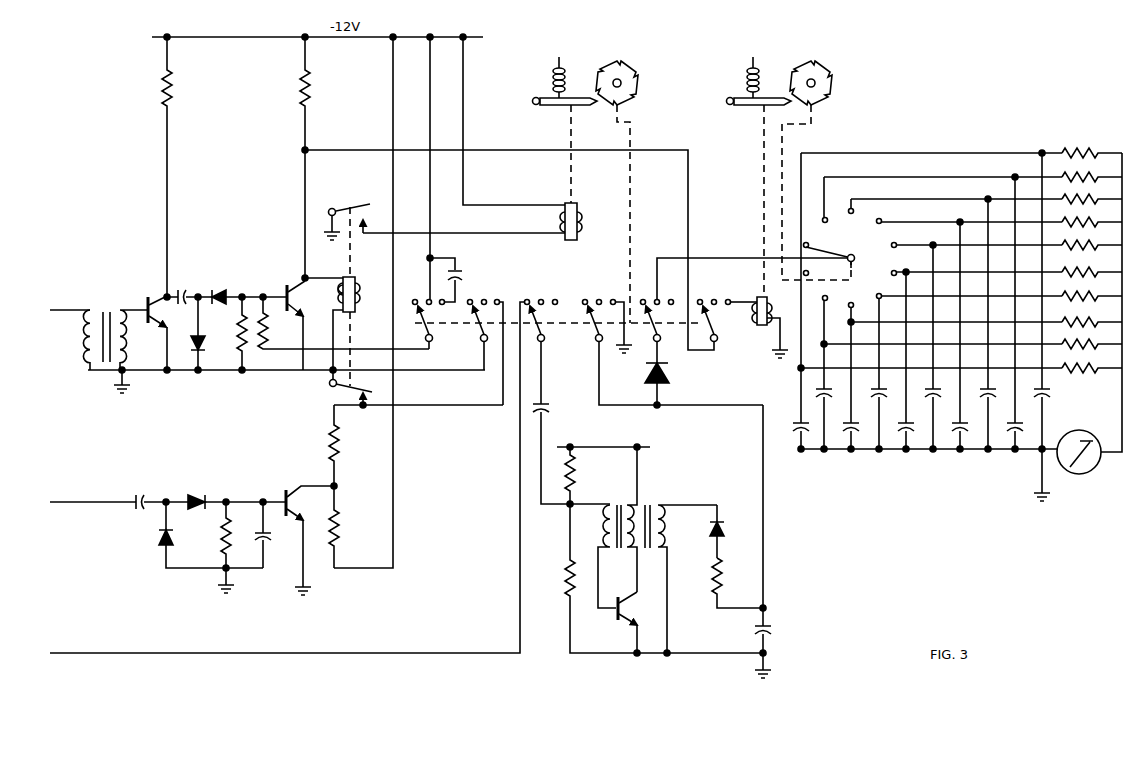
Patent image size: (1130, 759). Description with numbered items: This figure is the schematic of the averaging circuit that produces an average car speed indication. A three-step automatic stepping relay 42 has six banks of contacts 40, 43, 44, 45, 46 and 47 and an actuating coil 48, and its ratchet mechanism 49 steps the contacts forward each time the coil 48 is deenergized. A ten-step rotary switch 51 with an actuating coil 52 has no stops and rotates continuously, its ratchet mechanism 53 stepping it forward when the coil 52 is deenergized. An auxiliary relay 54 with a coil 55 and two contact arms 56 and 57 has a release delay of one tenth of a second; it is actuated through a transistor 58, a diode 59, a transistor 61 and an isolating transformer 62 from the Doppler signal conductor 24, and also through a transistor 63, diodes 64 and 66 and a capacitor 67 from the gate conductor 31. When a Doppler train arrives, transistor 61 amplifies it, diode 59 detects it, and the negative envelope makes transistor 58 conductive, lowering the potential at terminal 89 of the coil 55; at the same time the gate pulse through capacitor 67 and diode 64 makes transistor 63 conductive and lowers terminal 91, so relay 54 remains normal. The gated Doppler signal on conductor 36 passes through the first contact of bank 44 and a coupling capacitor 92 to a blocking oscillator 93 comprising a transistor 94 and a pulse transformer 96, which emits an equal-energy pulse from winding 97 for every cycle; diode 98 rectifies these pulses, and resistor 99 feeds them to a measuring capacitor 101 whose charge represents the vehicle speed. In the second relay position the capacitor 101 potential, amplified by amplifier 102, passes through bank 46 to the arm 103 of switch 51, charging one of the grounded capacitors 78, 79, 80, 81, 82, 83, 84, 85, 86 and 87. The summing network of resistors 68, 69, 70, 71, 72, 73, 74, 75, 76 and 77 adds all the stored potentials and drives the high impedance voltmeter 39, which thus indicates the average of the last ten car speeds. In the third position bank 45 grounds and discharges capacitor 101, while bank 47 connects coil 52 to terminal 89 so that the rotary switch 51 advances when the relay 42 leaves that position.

The Doppler signal conductor 24 is at (64, 310).
The 0.1-second gate conductor 31 is at (65, 502).
The gated Doppler conductor 36 is at (67, 652).
The indicating high impedance voltmeter 39 is at (1096, 470).
The bank of contacts 40 is at (441, 346).
The 3-step automatic stepping relay 42 is at (588, 193).
The bank of contacts 43 is at (479, 286).
The bank of contacts 44 is at (553, 346).
The bank of contacts 45 is at (594, 286).
The bank of contacts 46 is at (665, 346).
The bank of contacts 47 is at (727, 346).
The actuating coil 48 is at (582, 225).
The ratchet mechanism 49 is at (633, 66).
The 10-step rotary switch 51 is at (880, 265).
The actuating coil 52 is at (768, 301).
The ratchet mechanism 53 is at (827, 66).
The auxiliary relay 54 is at (361, 292).
The relay coil 55 is at (338, 293).
The contact arm 56 is at (334, 390).
The contact arm 57 is at (353, 207).
The transistor 58 is at (286, 290).
The diode 59 is at (217, 288).
The transistor 61 is at (149, 297).
The isolating transformer 62 is at (105, 312).
The transistor 63 is at (284, 492).
The diode 64 is at (188, 495).
The diode 66 is at (156, 544).
The capacitor 67 is at (136, 494).
The resistor 68 is at (1064, 152).
The resistor 69 is at (1095, 177).
The resistor 70 is at (1064, 198).
The resistor 71 is at (1095, 222).
The resistor 72 is at (1064, 244).
The resistor 73 is at (1095, 272).
The resistor 74 is at (1064, 295).
The resistor 75 is at (1095, 322).
The resistor 76 is at (1064, 343).
The resistor 77 is at (1095, 368).
The grounded capacitor 78 is at (1048, 394).
The grounded capacitor 79 is at (1020, 427).
The grounded capacitor 80 is at (994, 394).
The grounded capacitor 81 is at (965, 427).
The grounded capacitor 82 is at (939, 394).
The grounded capacitor 83 is at (911, 427).
The grounded capacitor 84 is at (885, 394).
The grounded capacitor 85 is at (856, 427).
The grounded capacitor 86 is at (830, 394).
The grounded capacitor 87 is at (804, 427).
The terminal of relay coil 89 is at (303, 150).
The terminal of relay coil 91 is at (328, 375).
The coupling capacitor 92 is at (548, 407).
The blocking oscillator 93 is at (588, 635).
The transistor 94 is at (616, 599).
The pulse transformer 96 is at (616, 505).
The winding 97 is at (670, 544).
The diode 98 is at (722, 522).
The resistor 99 is at (726, 580).
The measuring capacitor 101 is at (746, 633).
The amplifier 102 is at (667, 373).
The arm 103 is at (830, 250).